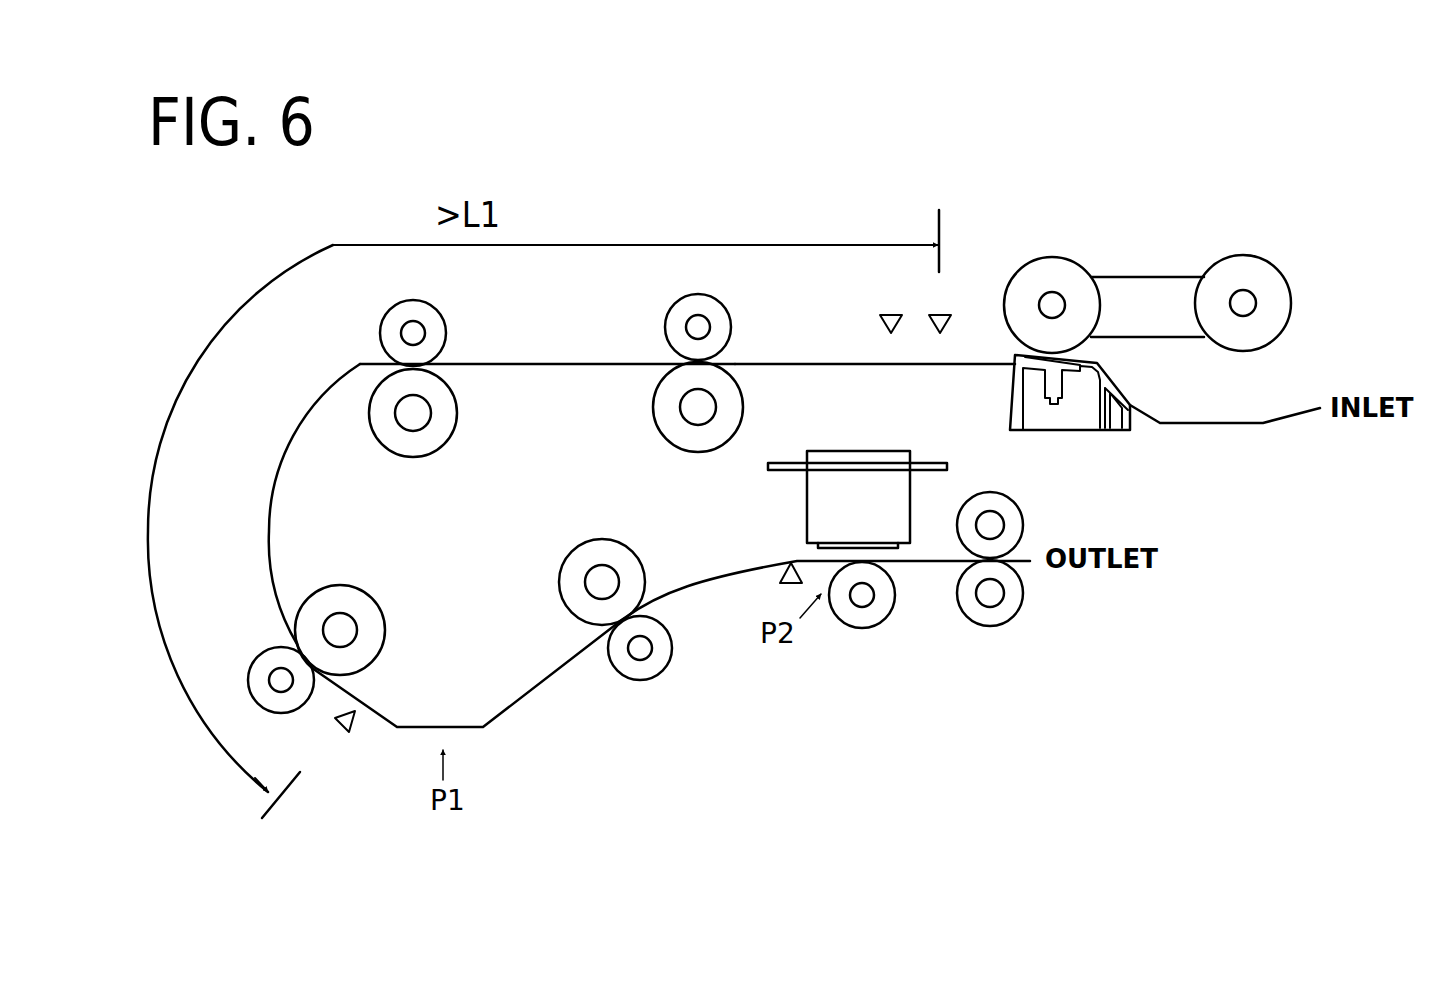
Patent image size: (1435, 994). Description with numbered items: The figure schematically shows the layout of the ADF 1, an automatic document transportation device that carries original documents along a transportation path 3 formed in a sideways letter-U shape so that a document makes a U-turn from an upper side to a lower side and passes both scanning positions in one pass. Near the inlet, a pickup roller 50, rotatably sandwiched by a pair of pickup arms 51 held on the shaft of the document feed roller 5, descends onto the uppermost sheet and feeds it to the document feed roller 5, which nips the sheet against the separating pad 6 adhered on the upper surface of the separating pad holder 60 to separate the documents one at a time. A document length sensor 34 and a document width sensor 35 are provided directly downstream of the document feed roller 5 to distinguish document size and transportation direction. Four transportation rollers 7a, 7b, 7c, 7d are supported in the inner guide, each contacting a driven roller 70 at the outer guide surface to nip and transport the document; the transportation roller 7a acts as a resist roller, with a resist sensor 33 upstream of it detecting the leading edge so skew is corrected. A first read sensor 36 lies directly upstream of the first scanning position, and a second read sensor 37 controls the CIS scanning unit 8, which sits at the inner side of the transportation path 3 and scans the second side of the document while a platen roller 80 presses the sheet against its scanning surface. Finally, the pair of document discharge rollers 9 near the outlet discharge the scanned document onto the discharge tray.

The ADF 1 is at (1385, 312).
The transportation path 3 is at (573, 350).
The document feed roller 5 is at (1025, 266).
The separating pad 6 is at (1057, 358).
The transportation roller 7a is at (673, 363).
The transportation roller 7b is at (441, 372).
The transportation roller 7c is at (331, 587).
The transportation roller 7d is at (559, 580).
The CIS scanning unit 8 is at (865, 451).
The document discharge rollers 9 is at (1023, 520).
The resist sensor 33 is at (745, 318).
The document length sensor 34 is at (940, 313).
The document width sensor 35 is at (891, 313).
The first read sensor 36 is at (351, 735).
The second read sensor 37 is at (781, 587).
The pickup roller 50 is at (1245, 256).
The pickup arms 51 is at (1143, 277).
The separating pad holder 60 is at (1010, 397).
The driven rollers 70 is at (440, 312).
The platen roller 80 is at (884, 620).